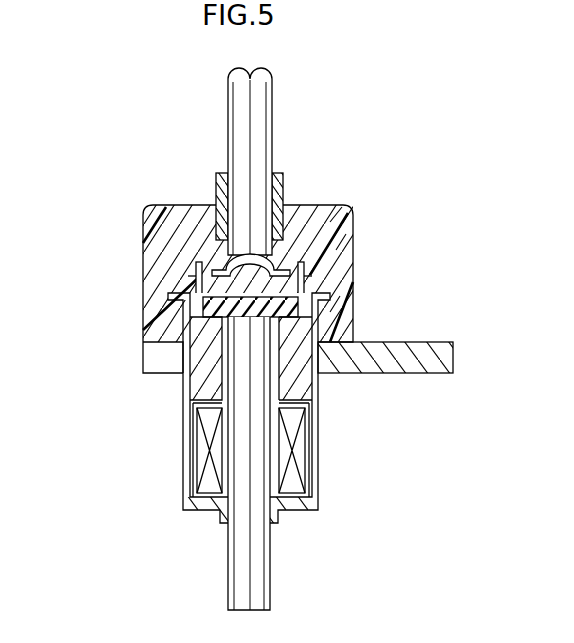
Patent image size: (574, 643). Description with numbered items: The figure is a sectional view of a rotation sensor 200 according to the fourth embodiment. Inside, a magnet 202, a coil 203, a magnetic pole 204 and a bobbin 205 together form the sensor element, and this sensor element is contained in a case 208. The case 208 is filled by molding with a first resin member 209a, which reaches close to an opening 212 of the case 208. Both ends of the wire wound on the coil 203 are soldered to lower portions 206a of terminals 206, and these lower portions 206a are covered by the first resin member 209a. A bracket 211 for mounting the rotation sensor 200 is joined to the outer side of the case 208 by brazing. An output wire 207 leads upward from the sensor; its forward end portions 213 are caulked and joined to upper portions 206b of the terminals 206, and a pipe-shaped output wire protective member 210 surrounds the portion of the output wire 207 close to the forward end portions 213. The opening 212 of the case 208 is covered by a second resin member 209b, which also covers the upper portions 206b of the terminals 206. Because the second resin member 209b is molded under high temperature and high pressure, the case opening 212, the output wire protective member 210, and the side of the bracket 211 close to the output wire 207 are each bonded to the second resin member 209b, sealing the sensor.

The rotation sensor 200 is at (388, 107).
The magnet 202 is at (205, 375).
The coil 203 is at (190, 462).
The magnetic pole 204 is at (272, 573).
The bobbin 205 is at (210, 404).
The terminals 206 is at (352, 283).
The lower portions of the terminals 206a is at (320, 312).
The upper portions of the terminals 206b is at (336, 250).
The output wire 207 is at (275, 99).
The case 208 is at (320, 425).
The first resin member 209a is at (188, 281).
The second resin member 209b is at (340, 214).
The output wire protective member 210 is at (287, 182).
The bracket 211 is at (405, 375).
The opening 212 is at (180, 296).
The forward end portions 213 is at (216, 262).